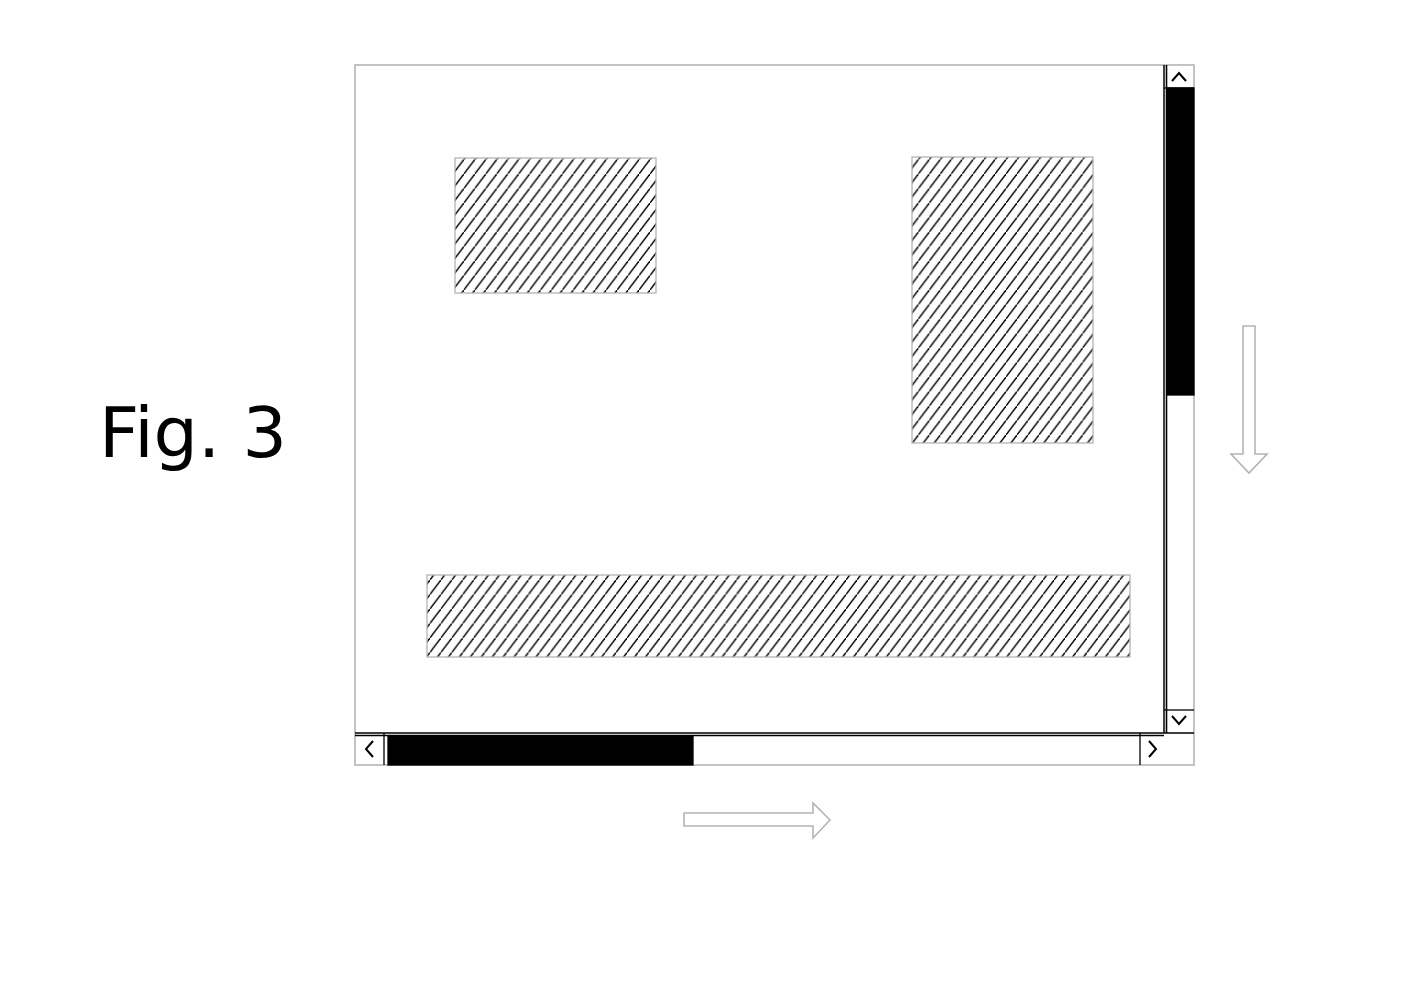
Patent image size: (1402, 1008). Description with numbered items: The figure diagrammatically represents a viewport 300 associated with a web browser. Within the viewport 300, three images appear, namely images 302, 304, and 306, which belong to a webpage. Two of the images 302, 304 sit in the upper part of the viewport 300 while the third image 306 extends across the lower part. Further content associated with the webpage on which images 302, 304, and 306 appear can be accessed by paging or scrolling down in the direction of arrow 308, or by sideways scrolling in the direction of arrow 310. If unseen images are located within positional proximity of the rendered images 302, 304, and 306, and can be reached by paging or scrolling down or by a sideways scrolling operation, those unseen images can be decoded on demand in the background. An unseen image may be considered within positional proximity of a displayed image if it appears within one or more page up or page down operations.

The viewport 300 is at (382, 65).
The image 302 is at (557, 158).
The image 304 is at (1003, 157).
The image 306 is at (776, 575).
The arrow 308 is at (1255, 399).
The arrow 310 is at (757, 826).